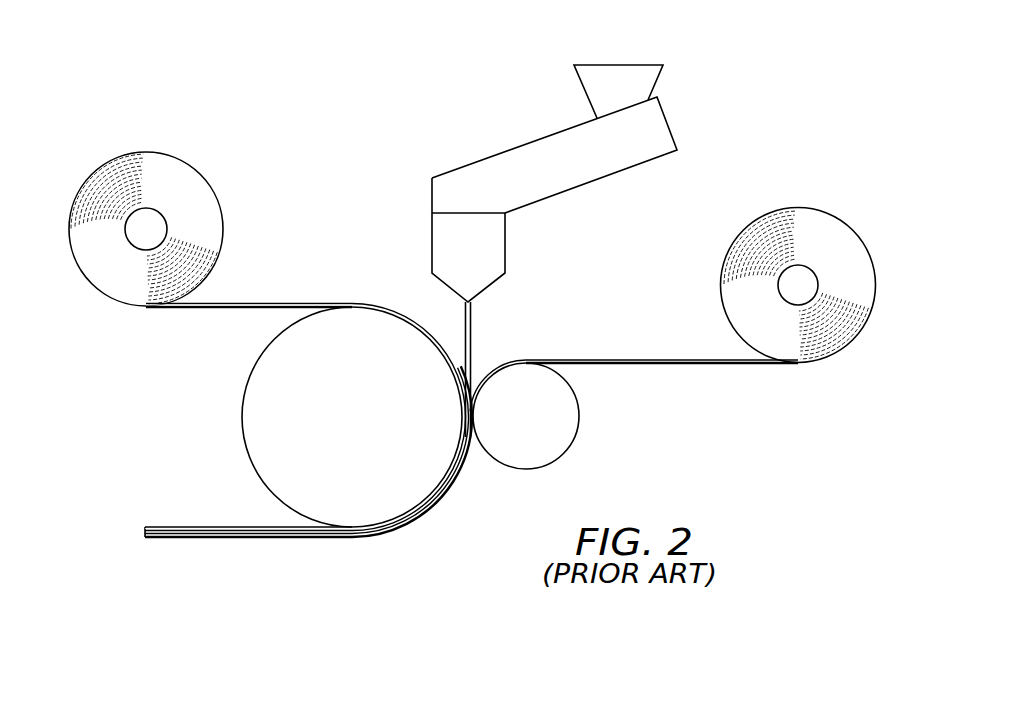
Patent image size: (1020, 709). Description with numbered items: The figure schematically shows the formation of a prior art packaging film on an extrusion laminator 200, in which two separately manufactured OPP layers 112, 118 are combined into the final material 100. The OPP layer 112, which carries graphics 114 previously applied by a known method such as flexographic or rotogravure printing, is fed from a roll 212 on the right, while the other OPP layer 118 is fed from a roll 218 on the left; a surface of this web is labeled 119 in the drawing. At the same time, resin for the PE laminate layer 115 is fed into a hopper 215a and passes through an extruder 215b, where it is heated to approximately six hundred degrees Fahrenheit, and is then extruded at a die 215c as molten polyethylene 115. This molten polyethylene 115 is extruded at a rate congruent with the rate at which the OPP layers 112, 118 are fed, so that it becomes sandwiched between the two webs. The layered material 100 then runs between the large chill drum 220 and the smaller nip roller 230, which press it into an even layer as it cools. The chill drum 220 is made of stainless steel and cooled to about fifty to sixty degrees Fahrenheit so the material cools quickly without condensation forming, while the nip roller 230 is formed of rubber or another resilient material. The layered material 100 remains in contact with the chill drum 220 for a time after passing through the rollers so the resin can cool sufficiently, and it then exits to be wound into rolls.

The extrusion laminator 200 is at (344, 116).
The roll 218 is at (85, 182).
The roll 212 is at (838, 218).
The chill drum 220 is at (243, 437).
The nip roller 230 is at (575, 432).
The hopper 215a is at (632, 63).
The extruder 215b is at (677, 130).
The die 215c is at (505, 246).
The PE laminate layer 115 is at (472, 323).
The OPP layer 118 is at (268, 302).
The web surface 119 is at (220, 308).
The graphics 114 is at (656, 358).
The OPP layer 112 is at (703, 365).
The final material 100 is at (202, 538).